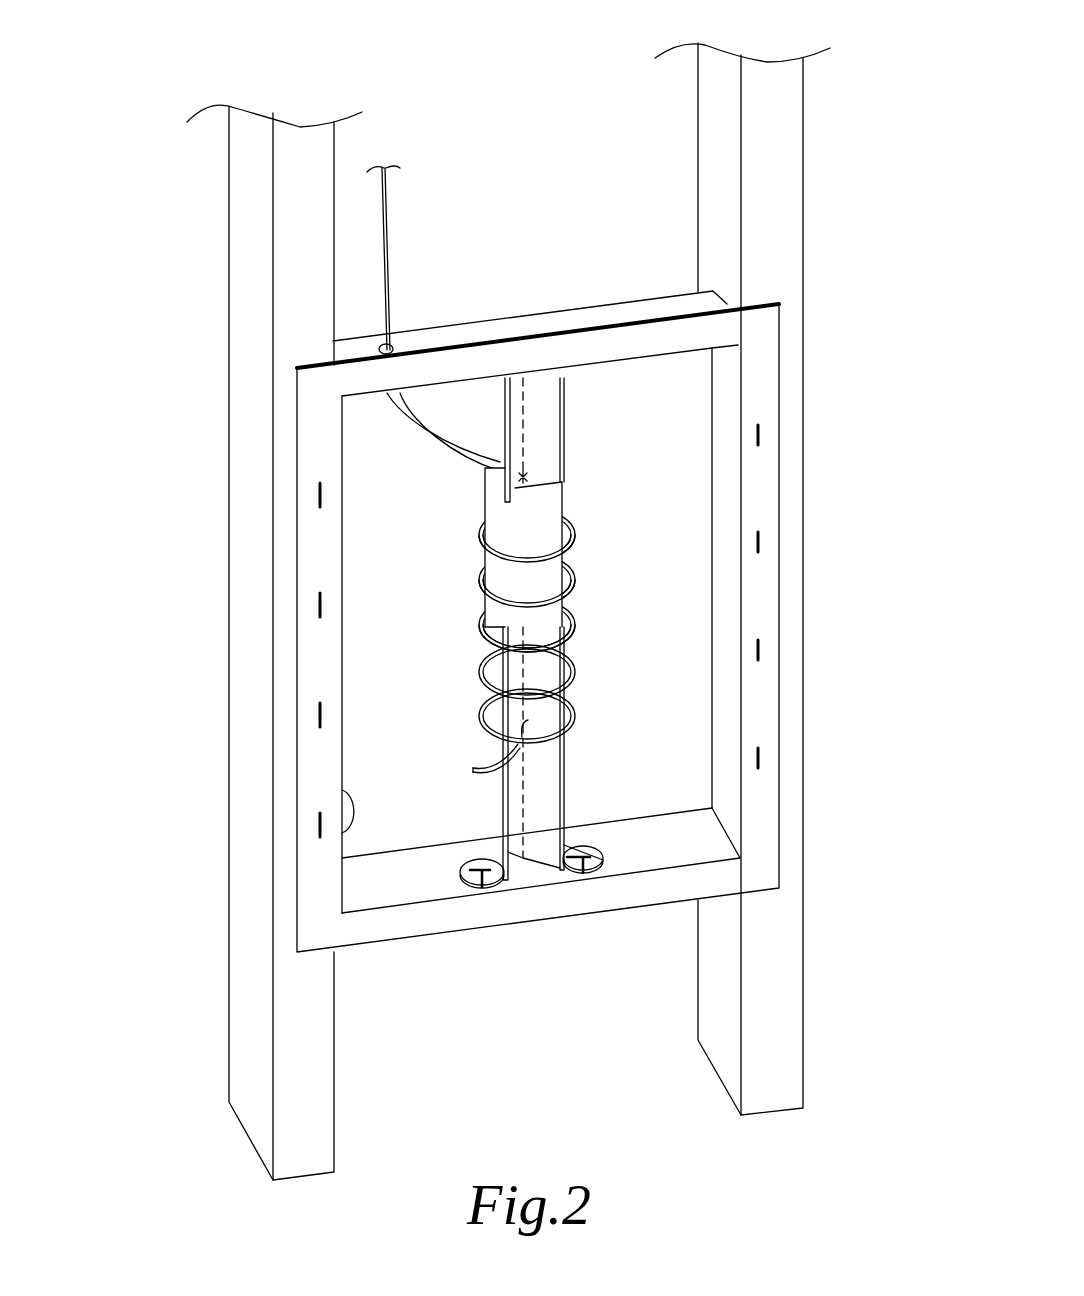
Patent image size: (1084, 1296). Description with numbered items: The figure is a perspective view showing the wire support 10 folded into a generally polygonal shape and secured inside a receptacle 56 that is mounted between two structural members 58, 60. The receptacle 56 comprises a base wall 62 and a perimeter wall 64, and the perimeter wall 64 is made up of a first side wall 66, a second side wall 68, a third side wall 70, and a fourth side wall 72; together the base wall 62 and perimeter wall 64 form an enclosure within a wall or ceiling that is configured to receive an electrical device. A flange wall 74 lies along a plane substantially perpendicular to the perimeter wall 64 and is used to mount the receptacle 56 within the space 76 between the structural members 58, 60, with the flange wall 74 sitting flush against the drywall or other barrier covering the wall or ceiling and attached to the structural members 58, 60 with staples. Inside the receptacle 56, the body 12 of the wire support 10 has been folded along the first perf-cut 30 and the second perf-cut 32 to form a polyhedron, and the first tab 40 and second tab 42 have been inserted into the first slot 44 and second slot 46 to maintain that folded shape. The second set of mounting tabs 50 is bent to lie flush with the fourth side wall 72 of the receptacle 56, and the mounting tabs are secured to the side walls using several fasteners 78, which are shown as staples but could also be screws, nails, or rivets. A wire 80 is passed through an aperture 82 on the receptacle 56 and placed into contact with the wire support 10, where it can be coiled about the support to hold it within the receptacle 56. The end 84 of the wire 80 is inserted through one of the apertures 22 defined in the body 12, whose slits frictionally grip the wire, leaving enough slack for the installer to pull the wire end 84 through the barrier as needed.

The wire support 10 is at (585, 442).
The body 12 is at (590, 643).
The aperture 22 is at (522, 727).
The first perf-cut 30 is at (520, 686).
The second perf-cut 32 is at (575, 563).
The first tab 40 is at (478, 481).
The second tab 42 is at (477, 622).
The first slot 44 is at (500, 466).
The second slot 46 is at (495, 637).
The second set of mounting tabs 50 is at (458, 885).
The receptacle 56 is at (607, 293).
The structural member 58 is at (253, 155).
The structural member 60 is at (775, 102).
The base wall 62 is at (655, 705).
The perimeter wall 64 is at (730, 805).
The first side wall 66 is at (340, 815).
The second side wall 68 is at (360, 343).
The third side wall 70 is at (720, 495).
The fourth side wall 72 is at (662, 845).
The flange wall 74 is at (322, 912).
The space 76 is at (615, 1025).
The fastener 78 is at (485, 882).
The wire 80 is at (380, 265).
The aperture 82 is at (333, 349).
The end 84 is at (477, 773).